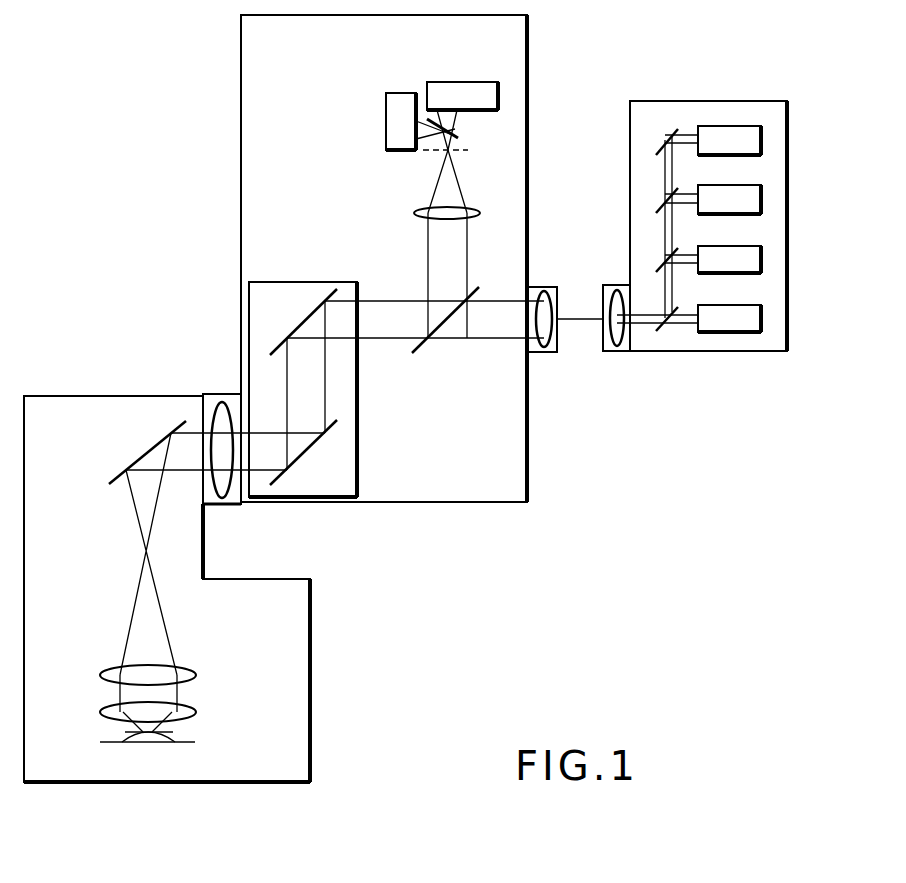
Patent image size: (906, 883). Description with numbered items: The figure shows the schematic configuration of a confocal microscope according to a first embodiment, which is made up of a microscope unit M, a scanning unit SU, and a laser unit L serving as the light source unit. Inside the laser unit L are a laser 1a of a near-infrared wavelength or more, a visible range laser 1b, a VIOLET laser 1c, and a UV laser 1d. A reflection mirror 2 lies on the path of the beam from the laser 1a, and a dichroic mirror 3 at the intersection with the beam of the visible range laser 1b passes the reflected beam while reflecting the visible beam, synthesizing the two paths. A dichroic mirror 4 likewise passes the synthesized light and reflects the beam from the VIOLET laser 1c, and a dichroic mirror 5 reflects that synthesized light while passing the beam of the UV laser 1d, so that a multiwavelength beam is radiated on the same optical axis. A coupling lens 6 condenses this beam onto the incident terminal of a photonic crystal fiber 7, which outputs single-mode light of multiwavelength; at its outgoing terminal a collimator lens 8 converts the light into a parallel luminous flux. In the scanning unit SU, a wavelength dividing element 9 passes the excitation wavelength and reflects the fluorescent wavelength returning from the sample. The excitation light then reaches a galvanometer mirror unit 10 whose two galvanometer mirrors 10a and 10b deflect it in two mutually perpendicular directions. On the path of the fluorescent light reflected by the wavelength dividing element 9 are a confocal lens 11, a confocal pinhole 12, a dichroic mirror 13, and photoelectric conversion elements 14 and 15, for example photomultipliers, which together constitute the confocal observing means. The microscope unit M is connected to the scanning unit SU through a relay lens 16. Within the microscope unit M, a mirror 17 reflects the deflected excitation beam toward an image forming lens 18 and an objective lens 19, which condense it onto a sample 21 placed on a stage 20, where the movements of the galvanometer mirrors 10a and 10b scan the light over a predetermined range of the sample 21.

The laser of a near-infrared wavelength or more 1a is at (761, 140).
The visible range laser 1b is at (761, 200).
The VIOLET laser 1c is at (761, 260).
The UV laser 1d is at (761, 318).
The reflection mirror 2 is at (656, 150).
The dichroic mirror 3 is at (656, 208).
The dichroic mirror 4 is at (656, 268).
The dichroic mirror 5 is at (664, 330).
The coupling lens 6 is at (612, 345).
The photonic crystal fiber 7 is at (575, 322).
The collimator lens 8 is at (542, 300).
The wavelength dividing element 9 is at (420, 348).
The galvanometer mirror unit 10 is at (357, 447).
The galvanometer mirror 10a is at (306, 317).
The galvanometer mirror 10b is at (300, 456).
The confocal lens 11 is at (413, 213).
The confocal pinhole 12 is at (470, 152).
The dichroic mirror 13 is at (458, 133).
The photoelectric conversion element 14 is at (461, 82).
The photoelectric conversion element 15 is at (386, 112).
The relay lens 16 is at (224, 500).
The mirror 17 is at (116, 474).
The image forming lens 18 is at (196, 675).
The objective lens 19 is at (196, 712).
The stage 20 is at (180, 742).
The sample 21 is at (162, 728).
The scanning unit SU is at (527, 62).
The laser unit L is at (735, 101).
The microscope unit M is at (310, 640).